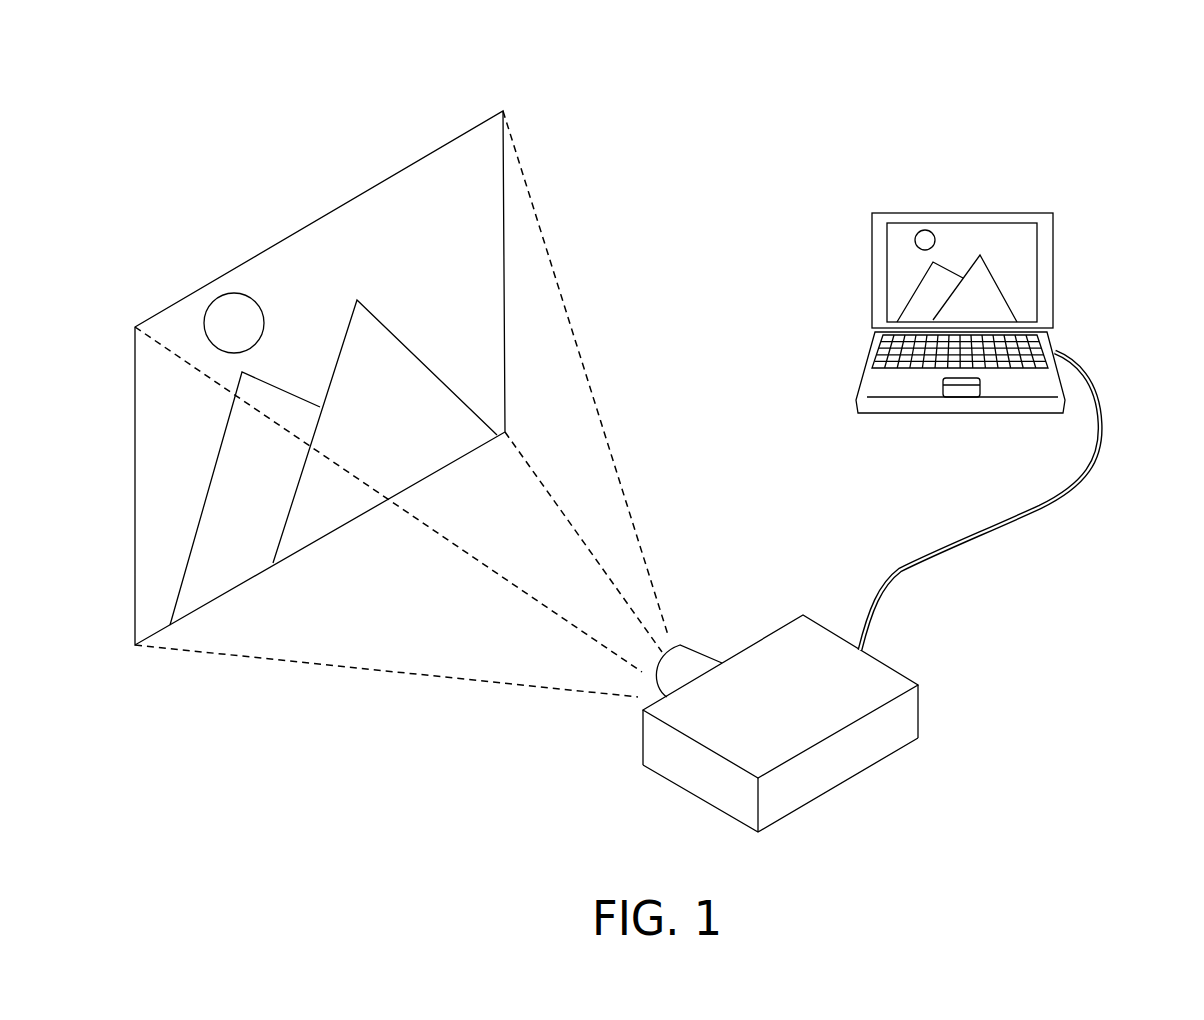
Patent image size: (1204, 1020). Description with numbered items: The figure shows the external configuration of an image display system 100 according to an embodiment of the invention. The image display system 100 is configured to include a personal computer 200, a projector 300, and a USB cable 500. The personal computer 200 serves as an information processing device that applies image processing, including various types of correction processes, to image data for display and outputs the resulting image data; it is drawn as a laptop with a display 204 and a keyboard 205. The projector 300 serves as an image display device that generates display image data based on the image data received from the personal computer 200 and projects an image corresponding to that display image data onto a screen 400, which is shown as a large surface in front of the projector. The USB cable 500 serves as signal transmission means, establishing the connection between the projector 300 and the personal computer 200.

The image display system 100 is at (708, 130).
The personal computer 200 is at (974, 308).
The display 204 is at (900, 262).
The keyboard 205 is at (880, 360).
The projector 300 is at (885, 747).
The screen 400 is at (421, 173).
The USB cable 500 is at (1082, 482).